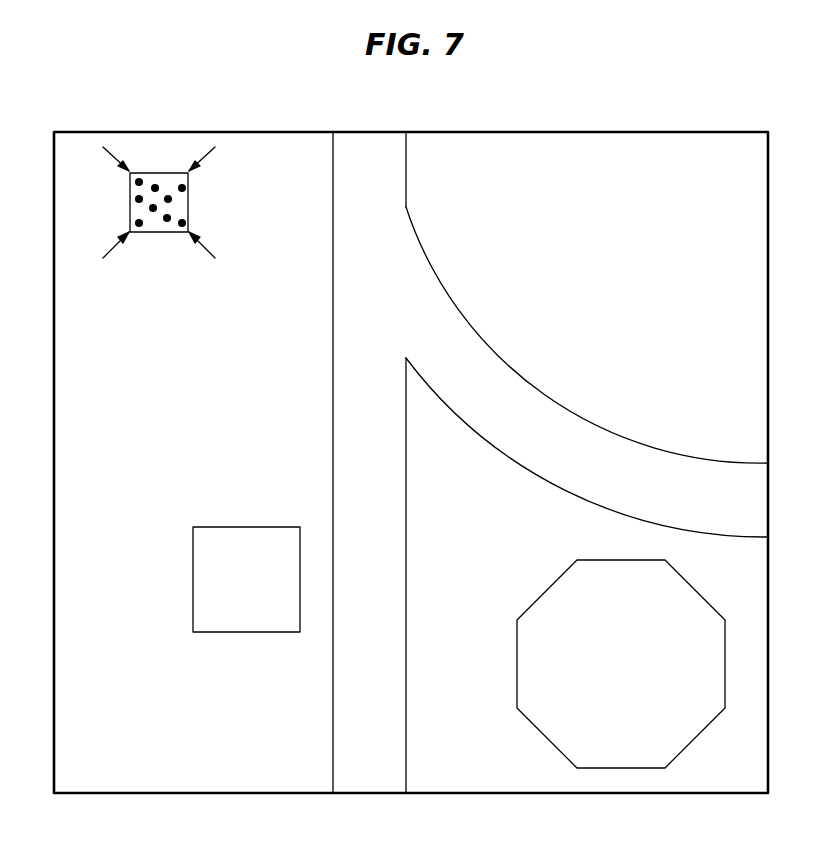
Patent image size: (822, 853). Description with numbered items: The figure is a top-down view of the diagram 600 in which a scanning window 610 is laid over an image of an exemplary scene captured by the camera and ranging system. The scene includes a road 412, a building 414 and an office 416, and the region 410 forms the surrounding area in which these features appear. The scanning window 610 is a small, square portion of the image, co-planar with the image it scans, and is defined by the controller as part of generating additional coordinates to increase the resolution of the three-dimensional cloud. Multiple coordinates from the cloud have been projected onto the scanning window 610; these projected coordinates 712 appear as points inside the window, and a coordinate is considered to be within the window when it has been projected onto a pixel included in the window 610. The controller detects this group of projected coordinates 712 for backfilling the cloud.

The perspective view diagram 600 is at (196, 114).
The road region 410 is at (607, 131).
The road 412 is at (432, 290).
The building 414 is at (225, 525).
The office 416 is at (517, 673).
The scanning window 610 is at (160, 233).
The feature points 712 is at (188, 188).